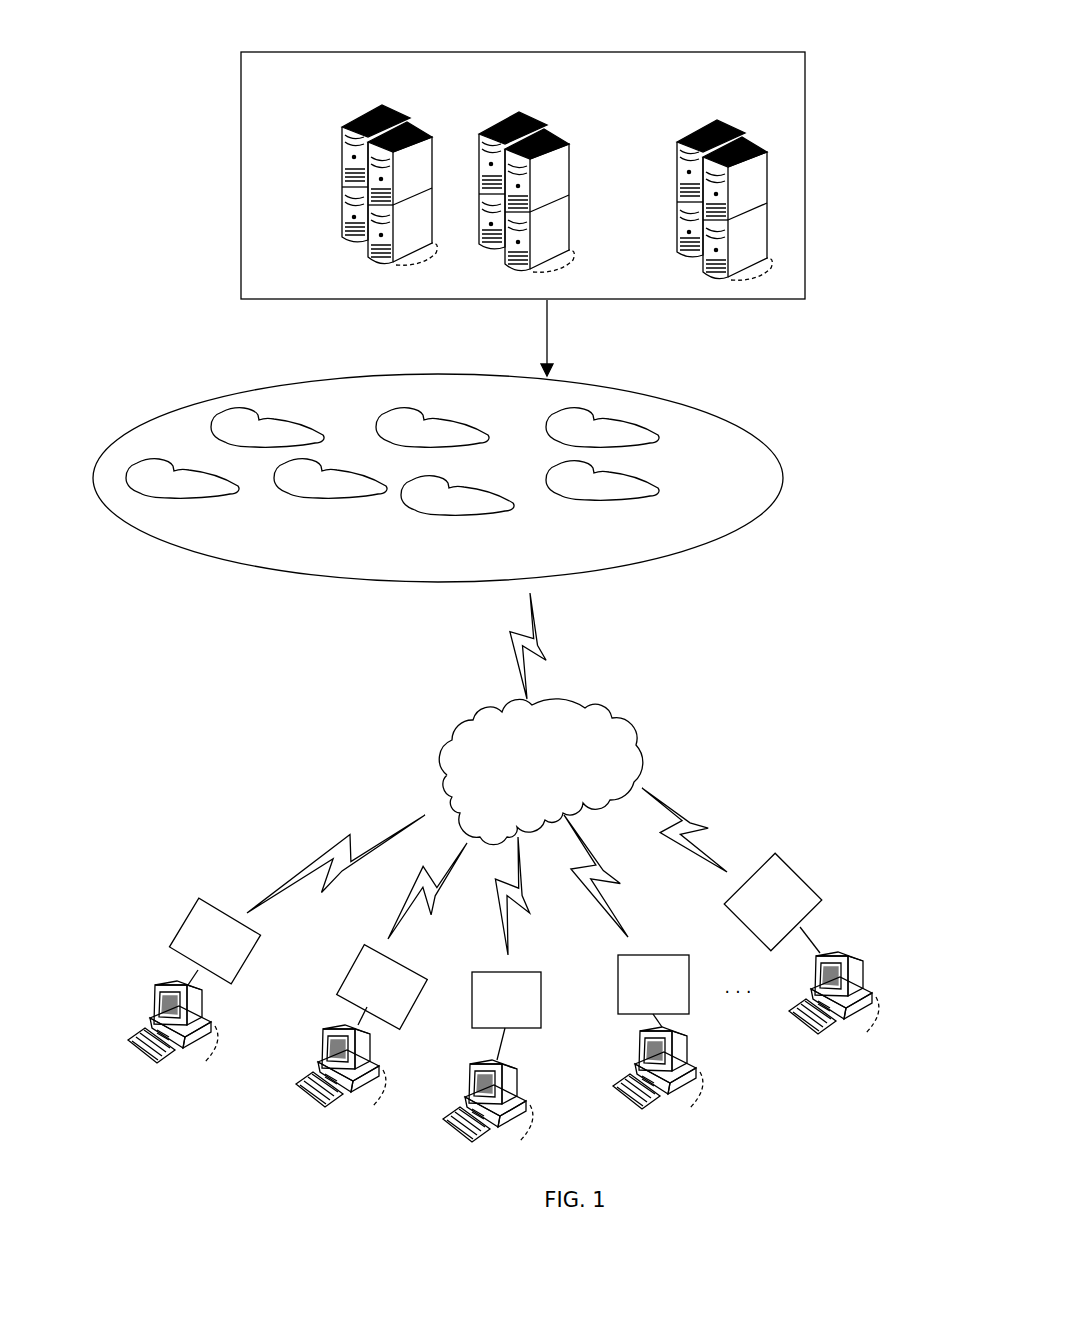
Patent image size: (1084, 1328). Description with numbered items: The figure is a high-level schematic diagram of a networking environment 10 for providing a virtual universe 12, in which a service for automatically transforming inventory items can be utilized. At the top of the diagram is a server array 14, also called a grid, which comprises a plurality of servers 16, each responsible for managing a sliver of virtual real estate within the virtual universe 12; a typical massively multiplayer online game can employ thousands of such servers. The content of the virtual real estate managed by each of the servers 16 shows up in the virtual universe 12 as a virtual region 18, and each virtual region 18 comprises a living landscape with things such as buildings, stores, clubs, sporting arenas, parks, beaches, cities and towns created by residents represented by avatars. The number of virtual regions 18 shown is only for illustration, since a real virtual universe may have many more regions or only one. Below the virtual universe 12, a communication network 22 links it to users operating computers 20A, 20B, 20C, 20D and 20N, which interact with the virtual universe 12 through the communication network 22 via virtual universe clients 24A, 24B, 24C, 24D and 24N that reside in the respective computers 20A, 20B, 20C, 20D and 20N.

The networking environment 10 is at (74, 283).
The virtual universe 12 is at (745, 428).
The server array 14 is at (272, 52).
The servers 16 is at (340, 147).
The virtual region 18 is at (272, 420).
The computer 20A is at (197, 1043).
The computer 20B is at (357, 1088).
The computer 20C is at (525, 1117).
The computer 20D is at (700, 1068).
The computer 20N is at (873, 993).
The communication network 22 is at (460, 727).
The virtual universe client 24A is at (247, 958).
The virtual universe client 24B is at (406, 1000).
The virtual universe client 24C is at (541, 980).
The virtual universe client 24D is at (684, 955).
The virtual universe client 24N is at (797, 876).